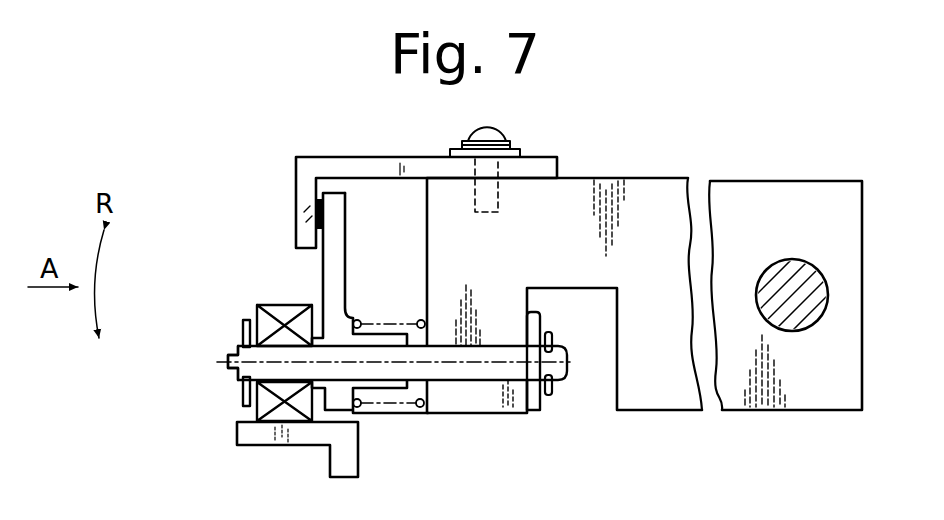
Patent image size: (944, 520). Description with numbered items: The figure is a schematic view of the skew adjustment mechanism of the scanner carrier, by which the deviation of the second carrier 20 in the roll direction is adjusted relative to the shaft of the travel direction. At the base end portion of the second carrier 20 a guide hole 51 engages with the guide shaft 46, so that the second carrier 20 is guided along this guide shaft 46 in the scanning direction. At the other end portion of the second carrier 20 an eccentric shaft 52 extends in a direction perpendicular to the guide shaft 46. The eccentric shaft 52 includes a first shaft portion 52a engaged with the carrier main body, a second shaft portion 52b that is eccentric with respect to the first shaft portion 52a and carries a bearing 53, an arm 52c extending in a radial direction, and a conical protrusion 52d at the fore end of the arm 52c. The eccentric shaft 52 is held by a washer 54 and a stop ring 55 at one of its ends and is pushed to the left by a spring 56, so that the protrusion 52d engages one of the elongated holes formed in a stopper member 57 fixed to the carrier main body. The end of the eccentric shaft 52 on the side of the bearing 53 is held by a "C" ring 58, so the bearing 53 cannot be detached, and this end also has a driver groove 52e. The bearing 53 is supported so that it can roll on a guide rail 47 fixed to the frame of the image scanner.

The second carrier 20 is at (635, 176).
The guide shaft 46 is at (803, 256).
The guide rail 47 is at (261, 451).
The guide hole 51 is at (812, 322).
The eccentric shaft 52 is at (357, 317).
The first shaft portion 52a is at (491, 371).
The second shaft portion 52b is at (275, 373).
The arm 52c is at (325, 273).
The conical protrusion 52d is at (316, 201).
The driver groove 52e is at (230, 363).
The bearing 53 is at (266, 305).
The washer 54 is at (534, 412).
The stop ring 55 is at (549, 396).
The spring 56 is at (360, 411).
The stopper member 57 is at (367, 156).
The "C" ring 58 is at (243, 323).